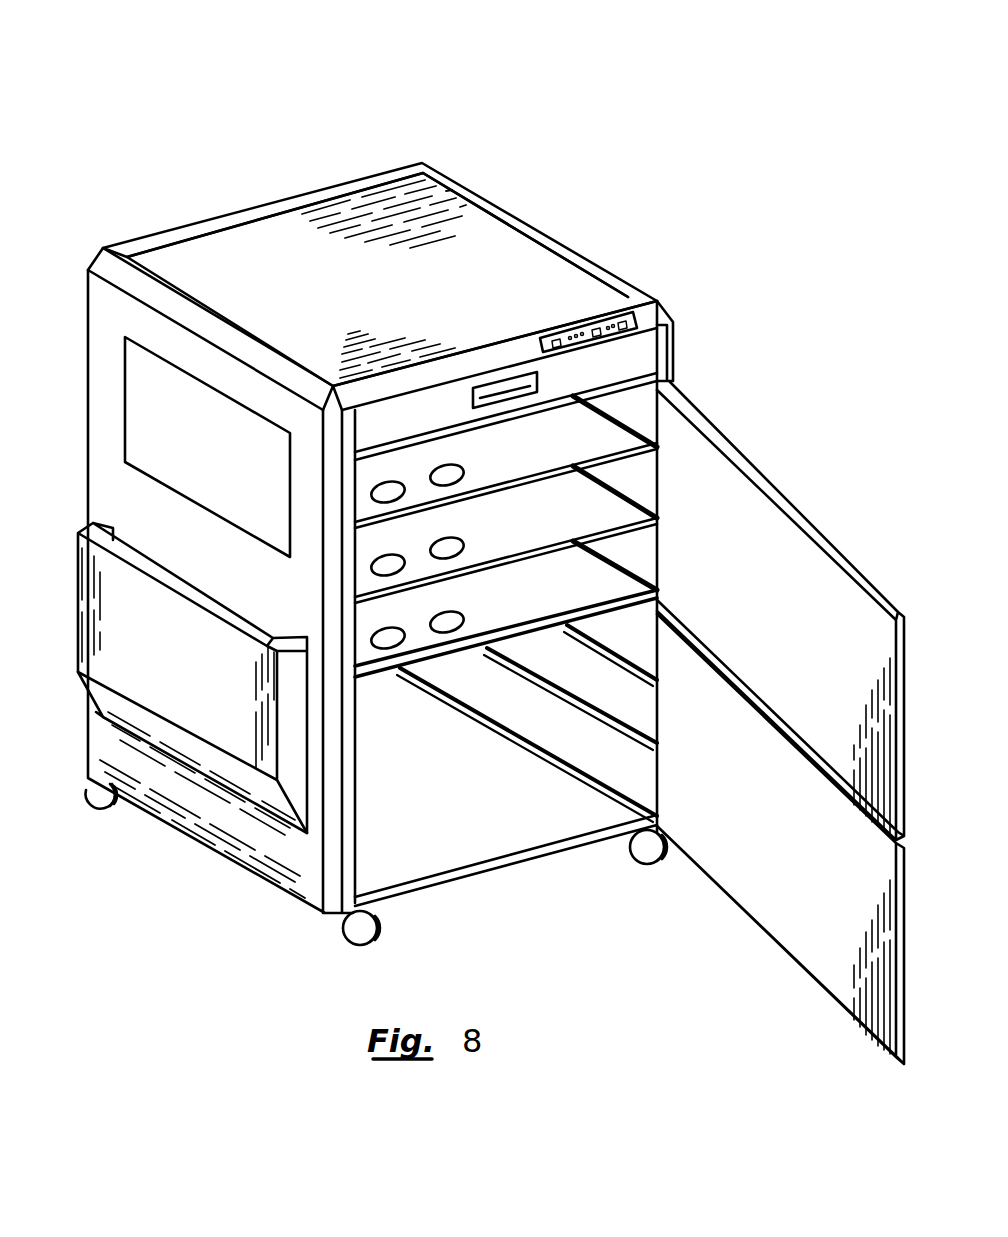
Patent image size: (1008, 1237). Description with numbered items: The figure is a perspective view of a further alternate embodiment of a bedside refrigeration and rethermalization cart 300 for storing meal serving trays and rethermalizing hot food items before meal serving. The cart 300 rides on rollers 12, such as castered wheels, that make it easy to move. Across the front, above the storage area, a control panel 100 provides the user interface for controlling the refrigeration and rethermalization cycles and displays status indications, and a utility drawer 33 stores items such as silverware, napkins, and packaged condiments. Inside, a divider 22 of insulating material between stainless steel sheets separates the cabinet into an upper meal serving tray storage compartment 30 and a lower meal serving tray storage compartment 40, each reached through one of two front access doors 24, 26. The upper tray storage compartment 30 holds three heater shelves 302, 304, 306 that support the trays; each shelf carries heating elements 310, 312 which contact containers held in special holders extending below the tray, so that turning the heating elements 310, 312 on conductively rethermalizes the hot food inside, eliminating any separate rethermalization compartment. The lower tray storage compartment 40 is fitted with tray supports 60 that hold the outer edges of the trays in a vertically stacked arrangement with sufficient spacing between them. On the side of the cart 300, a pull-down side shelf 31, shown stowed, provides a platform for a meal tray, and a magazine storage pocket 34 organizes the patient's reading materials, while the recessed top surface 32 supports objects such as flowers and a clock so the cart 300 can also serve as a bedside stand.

The cart 300 is at (423, 110).
The control panel 100 is at (645, 316).
The top surface 32 is at (352, 280).
The pull-down side shelf 31 is at (200, 446).
The utility drawer 33 is at (598, 390).
The magazine storage pocket 34 is at (165, 663).
The rollers 12 is at (94, 805).
The heating element 310 is at (437, 477).
The heating element 312 is at (358, 500).
The heater shelf 302 is at (579, 457).
The heater shelf 304 is at (577, 528).
The heater shelf 306 is at (572, 603).
The upper meal serving tray storage compartment 30 is at (637, 462).
The divider 22 is at (376, 677).
The tray supports 60 is at (593, 657).
The lower meal serving tray storage compartment 40 is at (488, 838).
The access door 24 is at (800, 645).
The access door 26 is at (801, 837).